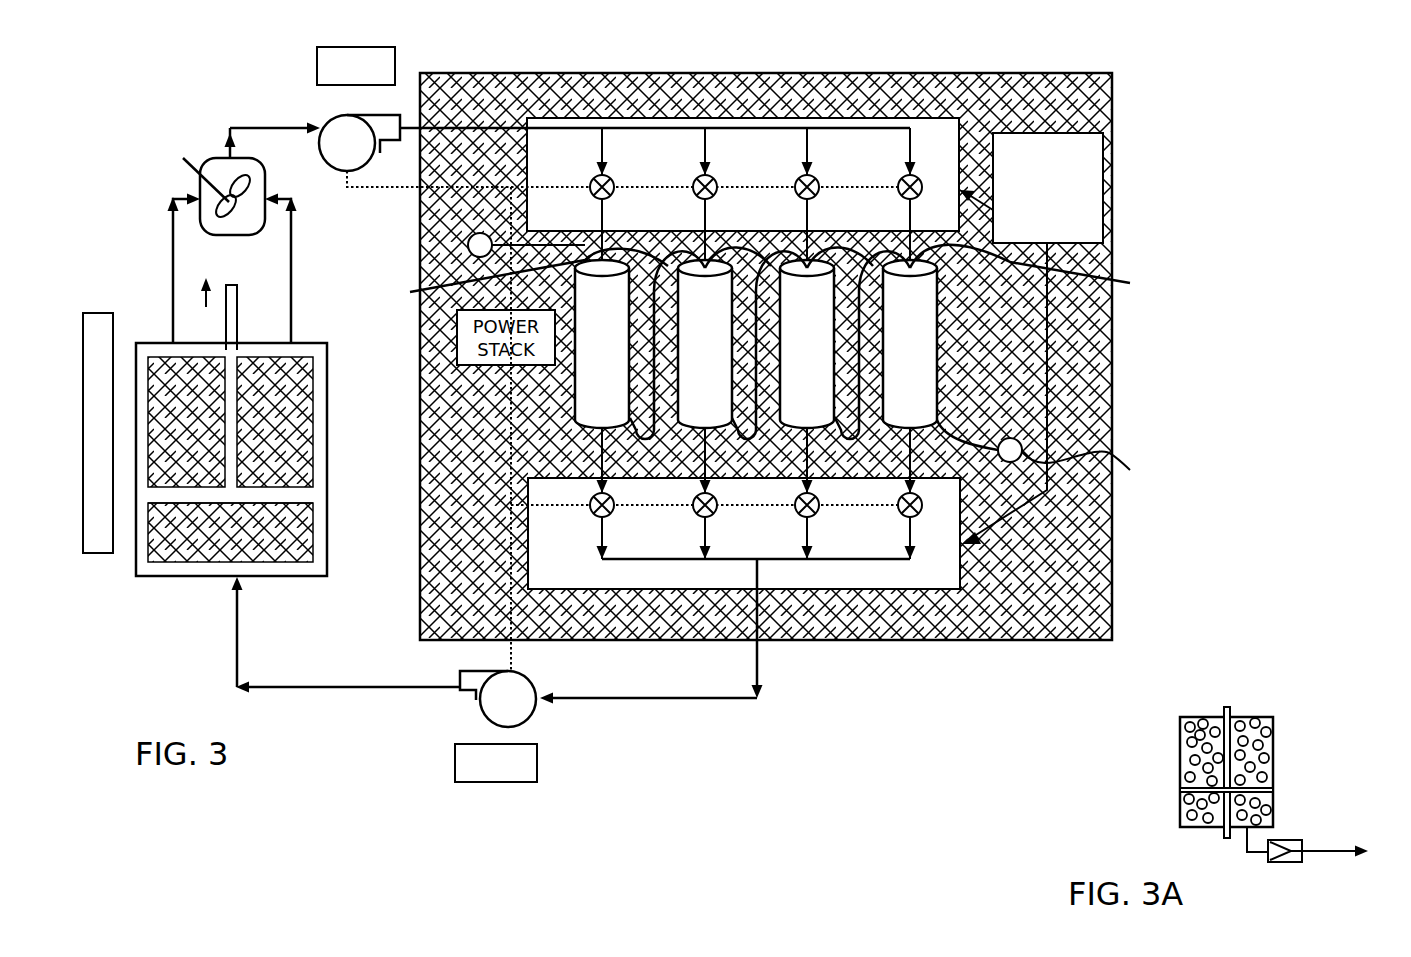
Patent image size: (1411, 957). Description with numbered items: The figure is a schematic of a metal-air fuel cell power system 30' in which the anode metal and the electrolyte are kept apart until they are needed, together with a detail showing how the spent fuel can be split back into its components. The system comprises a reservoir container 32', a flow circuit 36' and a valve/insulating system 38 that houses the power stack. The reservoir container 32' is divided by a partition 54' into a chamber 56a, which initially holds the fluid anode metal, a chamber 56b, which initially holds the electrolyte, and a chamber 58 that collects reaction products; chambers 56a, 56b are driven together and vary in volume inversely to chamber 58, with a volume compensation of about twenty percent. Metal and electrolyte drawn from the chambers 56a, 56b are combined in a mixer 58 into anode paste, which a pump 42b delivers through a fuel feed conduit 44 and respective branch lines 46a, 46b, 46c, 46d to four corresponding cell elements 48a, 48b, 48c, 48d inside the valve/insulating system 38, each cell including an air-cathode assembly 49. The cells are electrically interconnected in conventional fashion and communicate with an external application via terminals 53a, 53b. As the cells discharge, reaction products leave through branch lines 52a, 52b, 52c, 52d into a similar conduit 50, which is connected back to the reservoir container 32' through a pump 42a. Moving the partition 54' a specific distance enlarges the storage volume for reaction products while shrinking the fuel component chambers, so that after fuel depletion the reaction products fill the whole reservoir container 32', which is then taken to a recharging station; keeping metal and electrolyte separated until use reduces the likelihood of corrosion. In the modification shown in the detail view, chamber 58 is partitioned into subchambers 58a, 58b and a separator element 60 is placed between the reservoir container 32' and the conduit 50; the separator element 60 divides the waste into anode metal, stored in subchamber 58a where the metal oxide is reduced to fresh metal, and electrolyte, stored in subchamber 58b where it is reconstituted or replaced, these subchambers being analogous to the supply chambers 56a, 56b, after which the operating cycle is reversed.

In FIG. 3, the metal-air fuel cell power system 30' is at (813, 37).
In FIG. 3, the reservoir container 32' is at (205, 482).
In FIG. 3, the flow circuit 36' is at (346, 678).
In FIG. 3, the valve/insulating system 38 is at (937, 118).
In FIG. 3, the pump 42a is at (492, 720).
In FIG. 3, the pump 42b is at (333, 121).
In FIG. 3, the fuel feed conduit 44 is at (688, 126).
In FIG. 3, the branch line 46a is at (599, 163).
In FIG. 3, the branch line 46b is at (702, 163).
In FIG. 3, the branch line 46c is at (804, 163).
In FIG. 3, the branch line 46d is at (907, 163).
In FIG. 3, the cell element 48a is at (584, 398).
In FIG. 3, the cell element 48b is at (687, 398).
In FIG. 3, the cell element 48c is at (789, 398).
In FIG. 3, the cell element 48d is at (892, 398).
In FIG. 3, the air-cathode assembly 49 is at (771, 342).
In FIG. 3, the conduit 50 is at (857, 592).
In FIG. 3A, the conduit 50 is at (1387, 851).
In FIG. 3, the branch line 52a is at (599, 545).
In FIG. 3, the branch line 52b is at (702, 545).
In FIG. 3, the branch line 52c is at (804, 545).
In FIG. 3, the branch line 52d is at (907, 545).
In FIG. 3, the terminal 53a is at (468, 246).
In FIG. 3, the terminal 53b is at (1054, 393).
In FIG. 3, the partition 54' is at (262, 482).
In FIG. 3A, the partition 54' is at (1197, 772).
In FIG. 3, the chamber 56a is at (163, 372).
In FIG. 3A, the chamber 56a is at (1200, 746).
In FIG. 3, the chamber 56b is at (300, 408).
In FIG. 3A, the chamber 56b is at (1262, 746).
In FIG. 3, the mixer / chamber 58 is at (214, 164).
In FIG. 3A, the subchamber 58a is at (1201, 822).
In FIG. 3A, the subchamber 58b is at (1262, 812).
In FIG. 3A, the separator element 60 is at (1270, 860).